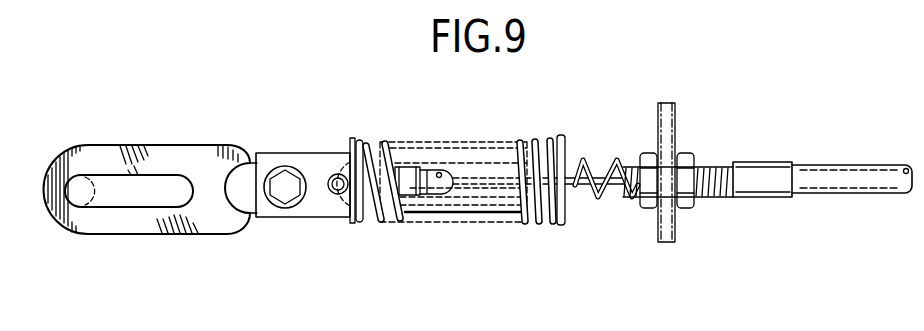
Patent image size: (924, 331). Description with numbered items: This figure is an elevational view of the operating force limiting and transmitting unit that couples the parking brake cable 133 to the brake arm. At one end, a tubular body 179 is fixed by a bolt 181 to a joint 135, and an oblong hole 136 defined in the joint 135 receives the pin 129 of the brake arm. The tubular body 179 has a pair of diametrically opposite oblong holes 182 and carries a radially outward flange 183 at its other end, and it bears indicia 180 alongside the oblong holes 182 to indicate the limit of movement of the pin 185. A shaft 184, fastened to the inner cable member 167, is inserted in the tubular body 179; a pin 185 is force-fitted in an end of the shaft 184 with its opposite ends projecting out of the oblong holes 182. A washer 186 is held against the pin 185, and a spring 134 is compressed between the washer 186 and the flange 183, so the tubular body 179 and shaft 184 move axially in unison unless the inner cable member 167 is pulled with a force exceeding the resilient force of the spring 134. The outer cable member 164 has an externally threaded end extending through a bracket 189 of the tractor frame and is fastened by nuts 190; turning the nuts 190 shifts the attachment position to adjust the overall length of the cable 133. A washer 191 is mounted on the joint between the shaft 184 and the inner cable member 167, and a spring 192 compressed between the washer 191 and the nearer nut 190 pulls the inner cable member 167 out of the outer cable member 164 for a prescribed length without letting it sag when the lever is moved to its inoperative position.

The pin 129 is at (93, 195).
The cable 133 is at (847, 163).
The spring 134 is at (363, 143).
The joint 135 is at (165, 148).
The oblong hole 136 is at (112, 180).
The outer cable member 164 is at (830, 197).
The inner cable member 167 is at (505, 183).
The tubular body 179 is at (303, 157).
The indicia 180 is at (403, 160).
The bolt 181 is at (282, 200).
The oblong holes 182 is at (445, 172).
The flange 183 is at (568, 135).
The shaft 184 is at (410, 195).
The pin 185 is at (338, 187).
The washer 186 is at (352, 228).
The bracket 189 is at (677, 123).
The nuts 190 is at (645, 155).
The washer 191 is at (443, 183).
The spring 192 is at (600, 200).